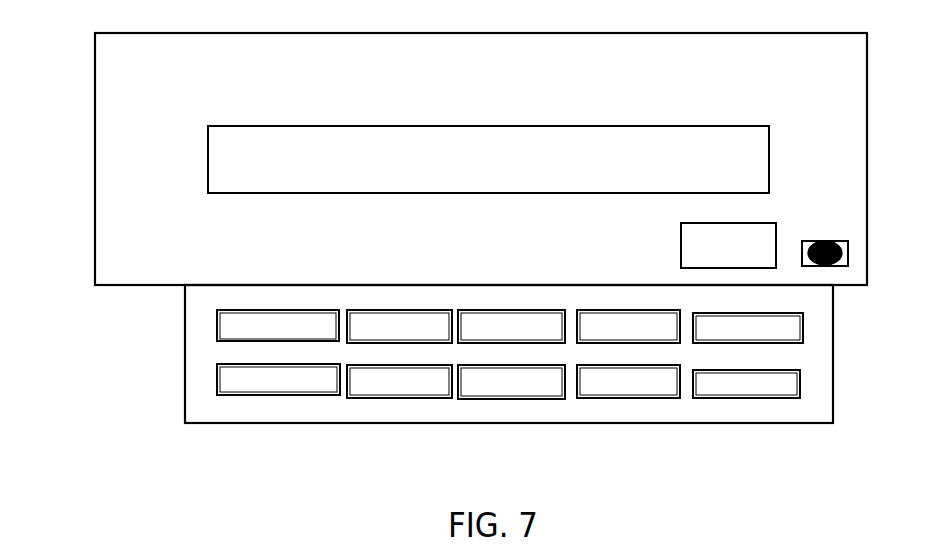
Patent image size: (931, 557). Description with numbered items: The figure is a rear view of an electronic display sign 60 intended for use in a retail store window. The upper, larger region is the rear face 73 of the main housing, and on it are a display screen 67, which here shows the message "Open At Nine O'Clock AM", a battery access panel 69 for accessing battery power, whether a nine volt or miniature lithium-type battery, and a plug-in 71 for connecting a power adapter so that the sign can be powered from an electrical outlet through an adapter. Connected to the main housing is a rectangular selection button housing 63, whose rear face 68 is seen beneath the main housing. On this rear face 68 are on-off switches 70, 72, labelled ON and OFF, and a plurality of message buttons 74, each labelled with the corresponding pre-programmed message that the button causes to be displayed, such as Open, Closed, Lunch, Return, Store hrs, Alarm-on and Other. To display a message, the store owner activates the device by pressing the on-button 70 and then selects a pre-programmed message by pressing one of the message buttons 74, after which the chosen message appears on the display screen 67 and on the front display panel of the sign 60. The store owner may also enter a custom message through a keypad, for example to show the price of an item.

The electronic display sign 60 is at (84, 49).
The selection button housing 63 is at (185, 372).
The display screen 67 is at (713, 134).
The rear face of selection button housing 68 is at (197, 310).
The battery access panel 69 is at (766, 233).
The on-button 70 is at (673, 395).
The plug-in 71 is at (840, 253).
The off switch 72 is at (787, 390).
The rear face of housing 73 is at (383, 84).
The message buttons 74 is at (365, 395).